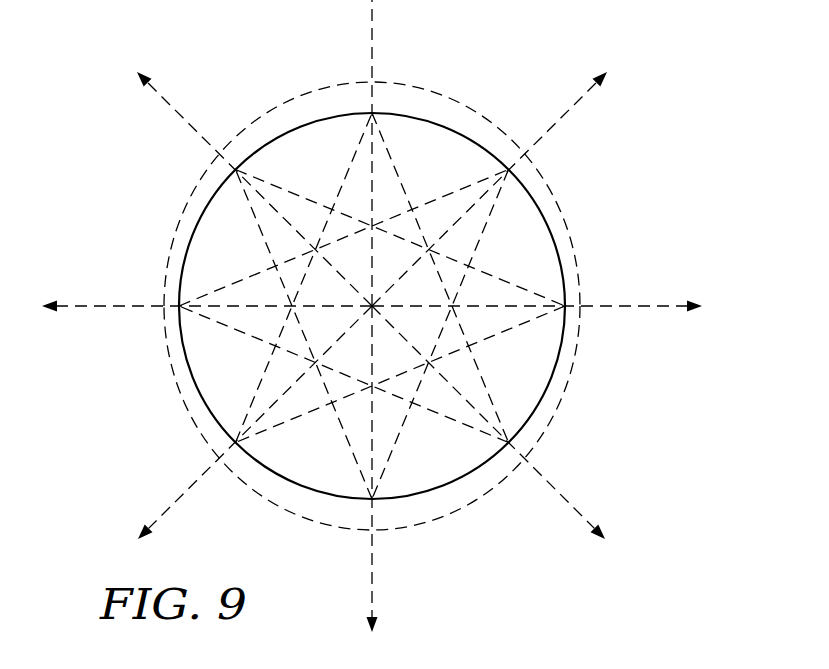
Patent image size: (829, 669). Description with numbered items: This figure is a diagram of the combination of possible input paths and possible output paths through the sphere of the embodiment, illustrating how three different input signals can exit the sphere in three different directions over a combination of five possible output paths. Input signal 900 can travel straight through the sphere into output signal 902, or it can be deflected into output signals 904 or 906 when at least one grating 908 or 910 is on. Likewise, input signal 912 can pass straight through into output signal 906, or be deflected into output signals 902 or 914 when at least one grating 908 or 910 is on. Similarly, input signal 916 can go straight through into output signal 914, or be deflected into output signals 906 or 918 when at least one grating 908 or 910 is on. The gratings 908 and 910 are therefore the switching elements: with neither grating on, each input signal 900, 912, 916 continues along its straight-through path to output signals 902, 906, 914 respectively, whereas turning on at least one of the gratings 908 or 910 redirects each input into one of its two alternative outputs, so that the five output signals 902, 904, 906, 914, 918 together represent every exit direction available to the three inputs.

The input signal 900 is at (178, 110).
The output signal 902 is at (567, 500).
The output signal 904 is at (652, 308).
The output signal 906 is at (372, 584).
The grating 908 is at (300, 93).
The grating 910 is at (445, 518).
The input signal 912 is at (373, 26).
The output signal 914 is at (177, 500).
The input signal 916 is at (565, 111).
The output signal 918 is at (92, 304).